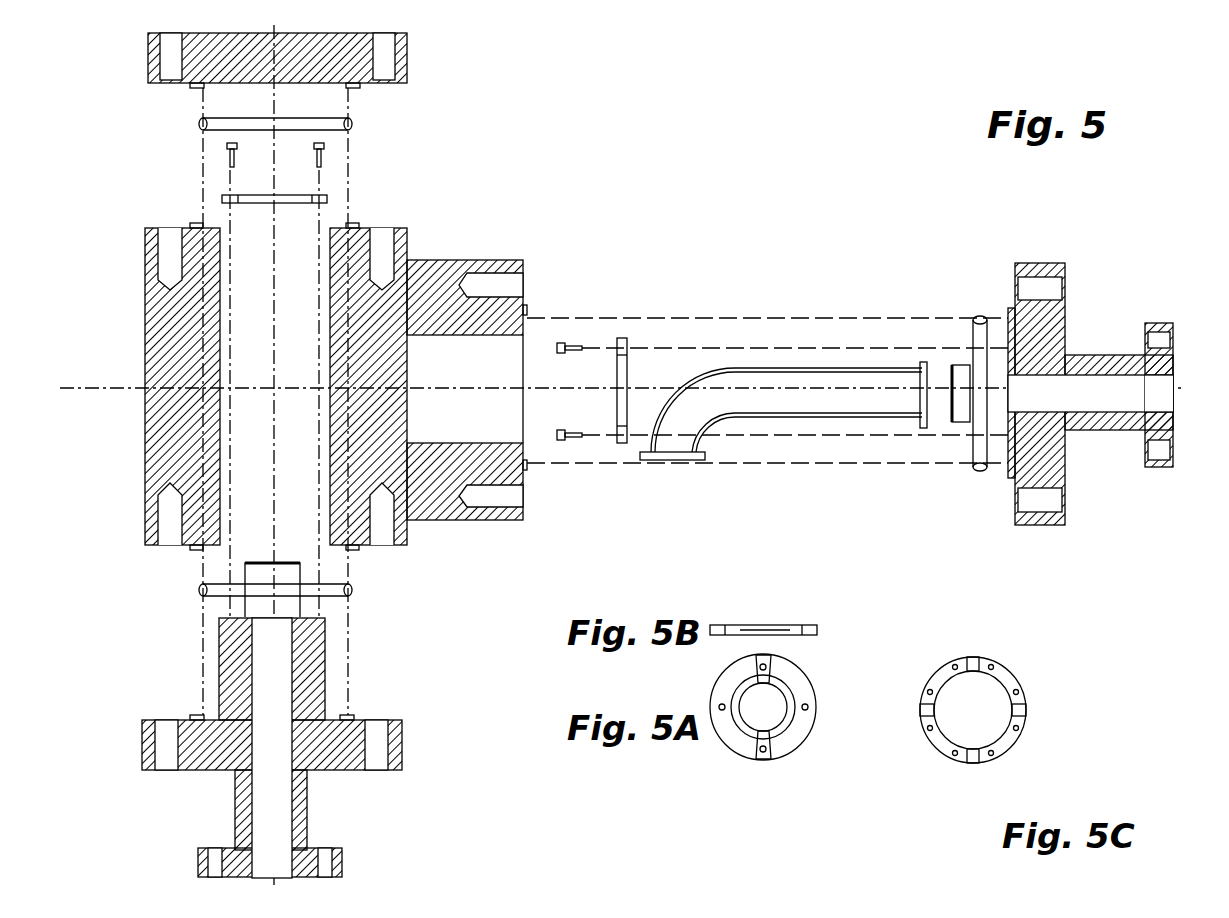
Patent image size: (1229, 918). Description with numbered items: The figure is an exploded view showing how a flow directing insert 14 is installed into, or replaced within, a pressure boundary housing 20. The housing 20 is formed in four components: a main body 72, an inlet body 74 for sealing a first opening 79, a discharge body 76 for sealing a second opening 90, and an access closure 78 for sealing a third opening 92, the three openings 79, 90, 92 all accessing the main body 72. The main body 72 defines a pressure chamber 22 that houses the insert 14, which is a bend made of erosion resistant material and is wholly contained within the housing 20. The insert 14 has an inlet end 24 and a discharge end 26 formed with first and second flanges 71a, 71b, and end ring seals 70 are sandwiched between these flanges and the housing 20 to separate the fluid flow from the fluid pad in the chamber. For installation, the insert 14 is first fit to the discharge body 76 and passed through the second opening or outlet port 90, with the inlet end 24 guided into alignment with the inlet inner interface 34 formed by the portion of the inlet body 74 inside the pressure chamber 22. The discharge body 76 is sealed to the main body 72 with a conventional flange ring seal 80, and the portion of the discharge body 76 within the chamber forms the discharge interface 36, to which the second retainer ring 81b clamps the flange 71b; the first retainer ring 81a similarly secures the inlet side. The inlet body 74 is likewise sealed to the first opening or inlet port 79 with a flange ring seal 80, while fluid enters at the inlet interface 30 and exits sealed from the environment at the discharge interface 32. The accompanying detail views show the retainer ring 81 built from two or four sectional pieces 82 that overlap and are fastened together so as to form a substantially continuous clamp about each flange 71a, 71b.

In FIG. 5, the flow directing insert 14 is at (795, 368).
In FIG. 5, the pressure boundary housing 20 is at (958, 190).
In FIG. 5, the pressure chamber 22 is at (397, 375).
In FIG. 5, the insert inlet end 24 is at (700, 455).
In FIG. 5, the insert discharge end 26 is at (913, 367).
In FIG. 5, the inlet interface 30 is at (240, 878).
In FIG. 5, the discharge interface 32 is at (1175, 360).
In FIG. 5, the inlet seal 34 is at (236, 618).
In FIG. 5, the discharge seal 36 is at (1010, 420).
In FIG. 5, the end ring seal 70 is at (292, 565).
In FIG. 5, the first flange 71a is at (635, 458).
In FIG. 5, the second flange 71b is at (924, 362).
In FIG. 5, the main body 72 is at (440, 262).
In FIG. 5, the inlet body 74 is at (347, 716).
In FIG. 5, the discharge body 76 is at (1060, 318).
In FIG. 5, the access closure 78 is at (365, 82).
In FIG. 5, the first opening 79 is at (222, 498).
In FIG. 5, the flange ring seal 80 is at (200, 123).
In FIG. 5B, the retainer ring 81 is at (800, 625).
In FIG. 5A, the retainer ring 81 is at (805, 677).
In FIG. 5C, the retainer ring 81 is at (1025, 726).
In FIG. 5, the first retainer ring 81a is at (300, 197).
In FIG. 5, the second retainer ring 81b is at (627, 352).
In FIG. 5A, the sectional piece 82 is at (790, 745).
In FIG. 5C, the sectional piece 82 is at (940, 665).
In FIG. 5, the second opening 90 is at (490, 337).
In FIG. 5, the third opening 92 is at (320, 258).